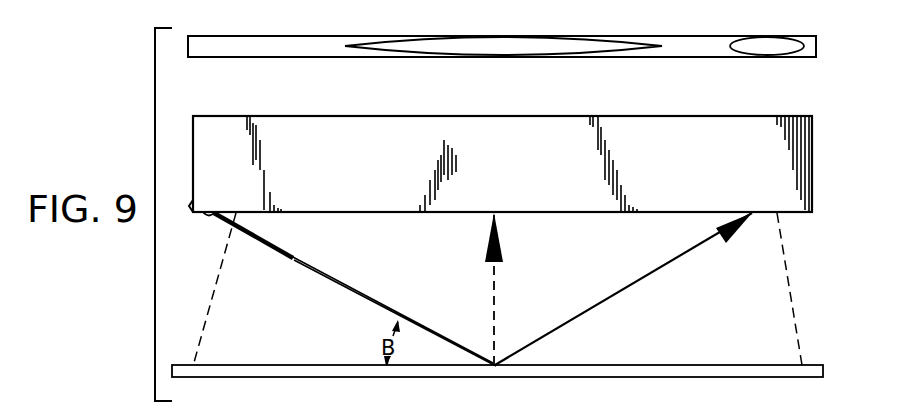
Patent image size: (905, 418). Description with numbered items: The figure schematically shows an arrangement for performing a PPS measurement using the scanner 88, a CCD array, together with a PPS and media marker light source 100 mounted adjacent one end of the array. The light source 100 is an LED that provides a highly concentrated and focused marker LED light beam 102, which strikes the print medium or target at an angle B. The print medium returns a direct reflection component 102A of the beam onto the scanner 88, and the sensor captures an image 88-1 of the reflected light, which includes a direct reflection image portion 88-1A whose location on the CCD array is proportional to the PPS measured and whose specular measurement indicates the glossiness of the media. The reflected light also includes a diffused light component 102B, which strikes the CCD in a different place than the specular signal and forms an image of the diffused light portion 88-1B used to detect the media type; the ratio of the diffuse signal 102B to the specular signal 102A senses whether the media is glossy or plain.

The scanner 88 is at (208, 127).
The image 88-1 is at (282, 44).
The direct reflection image portion 88-1A is at (760, 50).
The image of the diffused light portion 88-1B is at (420, 48).
The PPS and media marker light source 100 is at (208, 216).
The marker LED light beam 102 is at (397, 309).
The direct reflection component 102A is at (573, 322).
The diffused light component 102B is at (494, 278).